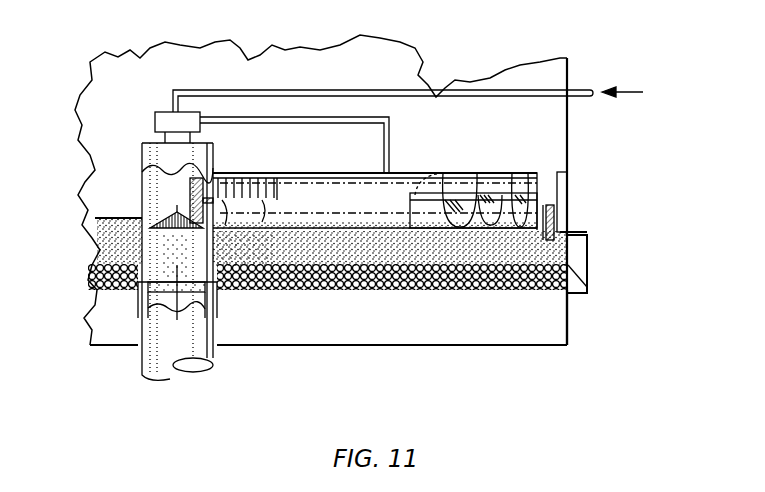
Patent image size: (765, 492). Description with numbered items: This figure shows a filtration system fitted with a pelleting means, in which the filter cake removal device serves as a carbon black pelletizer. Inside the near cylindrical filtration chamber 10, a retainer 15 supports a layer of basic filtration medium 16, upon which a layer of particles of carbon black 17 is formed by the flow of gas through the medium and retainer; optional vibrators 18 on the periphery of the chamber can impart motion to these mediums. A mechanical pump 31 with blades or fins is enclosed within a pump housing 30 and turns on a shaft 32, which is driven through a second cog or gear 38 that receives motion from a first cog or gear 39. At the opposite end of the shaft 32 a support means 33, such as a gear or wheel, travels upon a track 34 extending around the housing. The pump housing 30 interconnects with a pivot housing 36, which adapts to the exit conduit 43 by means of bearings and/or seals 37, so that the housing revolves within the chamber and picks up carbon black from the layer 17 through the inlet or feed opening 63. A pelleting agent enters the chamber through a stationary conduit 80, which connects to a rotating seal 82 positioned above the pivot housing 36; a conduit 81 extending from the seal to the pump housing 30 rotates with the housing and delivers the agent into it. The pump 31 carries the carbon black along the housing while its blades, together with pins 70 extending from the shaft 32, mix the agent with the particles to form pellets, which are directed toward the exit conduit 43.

The filtration chamber 10 is at (568, 65).
The retainer 15 is at (525, 292).
The basic filtration medium 16 is at (553, 290).
The layer of particles of carbon black 17 is at (95, 245).
The vibrator 18 is at (587, 250).
The pump housing 30 is at (445, 175).
The mechanical pump 31 is at (467, 288).
The shaft 32 is at (243, 230).
The support means 33 is at (563, 178).
The track 34 is at (572, 235).
The pivot housing 36 is at (140, 147).
The bearings and/or seals 37 is at (133, 297).
The second cog or gear 38 is at (210, 165).
The first cog or gear 39 is at (150, 222).
The exit conduit 43 is at (213, 360).
The inlet or feed opening 63 is at (498, 200).
The pins 70 is at (264, 287).
The conduit 80 is at (440, 92).
The conduit 81 is at (392, 128).
The rotating seal 82 is at (155, 115).